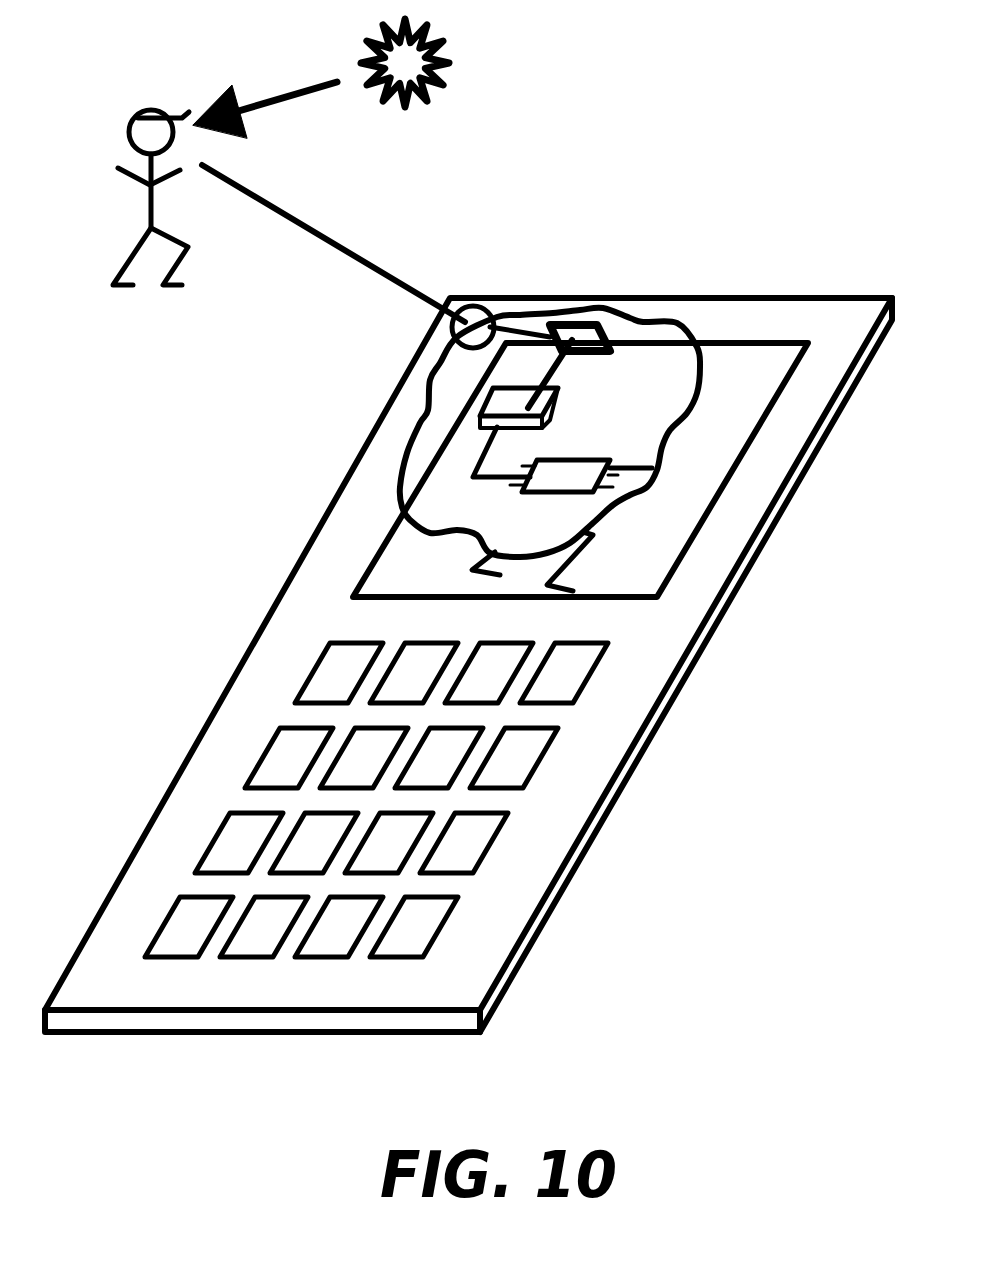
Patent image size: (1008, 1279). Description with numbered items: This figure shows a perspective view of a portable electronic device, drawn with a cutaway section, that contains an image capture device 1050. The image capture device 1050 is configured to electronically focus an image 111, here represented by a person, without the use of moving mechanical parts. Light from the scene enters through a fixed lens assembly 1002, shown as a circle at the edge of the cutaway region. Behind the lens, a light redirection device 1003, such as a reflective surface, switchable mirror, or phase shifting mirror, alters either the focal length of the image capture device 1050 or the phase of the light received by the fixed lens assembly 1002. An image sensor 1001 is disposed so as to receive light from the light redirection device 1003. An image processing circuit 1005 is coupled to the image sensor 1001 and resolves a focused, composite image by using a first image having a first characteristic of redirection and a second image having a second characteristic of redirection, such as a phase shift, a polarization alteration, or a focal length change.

The image 111 is at (113, 287).
The image capture device 1050 is at (412, 411).
The fixed lens assembly 1002 is at (475, 306).
The light redirection device 1003 is at (587, 321).
The image sensor 1001 is at (484, 419).
The image processing circuit 1005 is at (560, 470).